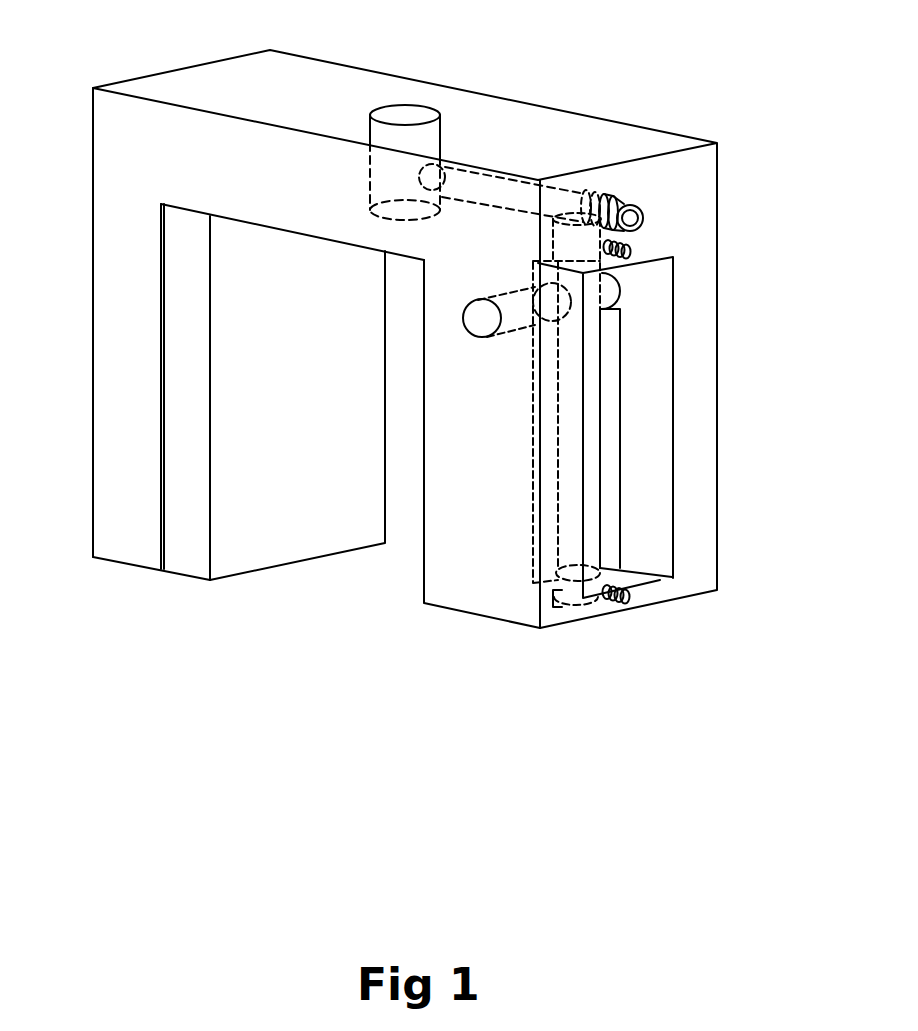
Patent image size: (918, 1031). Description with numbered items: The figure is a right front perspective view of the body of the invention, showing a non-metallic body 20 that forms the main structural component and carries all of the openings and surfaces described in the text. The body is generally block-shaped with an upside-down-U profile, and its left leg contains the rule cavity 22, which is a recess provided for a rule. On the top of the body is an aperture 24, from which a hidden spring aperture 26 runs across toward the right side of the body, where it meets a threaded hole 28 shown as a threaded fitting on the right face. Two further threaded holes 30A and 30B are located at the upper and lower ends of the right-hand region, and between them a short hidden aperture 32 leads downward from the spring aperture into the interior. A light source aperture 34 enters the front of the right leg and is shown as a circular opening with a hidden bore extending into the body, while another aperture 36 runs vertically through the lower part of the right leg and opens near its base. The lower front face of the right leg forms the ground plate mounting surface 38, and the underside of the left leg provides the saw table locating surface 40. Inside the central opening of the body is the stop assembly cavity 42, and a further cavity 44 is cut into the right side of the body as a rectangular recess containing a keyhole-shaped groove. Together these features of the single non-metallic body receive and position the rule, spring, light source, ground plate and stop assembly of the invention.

The non-metallic body 20 is at (277, 88).
The rule cavity 22 is at (180, 413).
The aperture 24 is at (405, 115).
The spring aperture 26 is at (472, 187).
The threaded hole 28 is at (643, 213).
The threaded hole 30A is at (645, 250).
The threaded hole 30B is at (660, 580).
The aperture 32 is at (577, 243).
The light source aperture 34 is at (482, 318).
The aperture 36 is at (575, 575).
The ground plate mounting surface 38 is at (482, 617).
The saw table locating surface 40 is at (125, 563).
The stop assembly cavity 42 is at (334, 575).
The cavity 44 is at (643, 408).